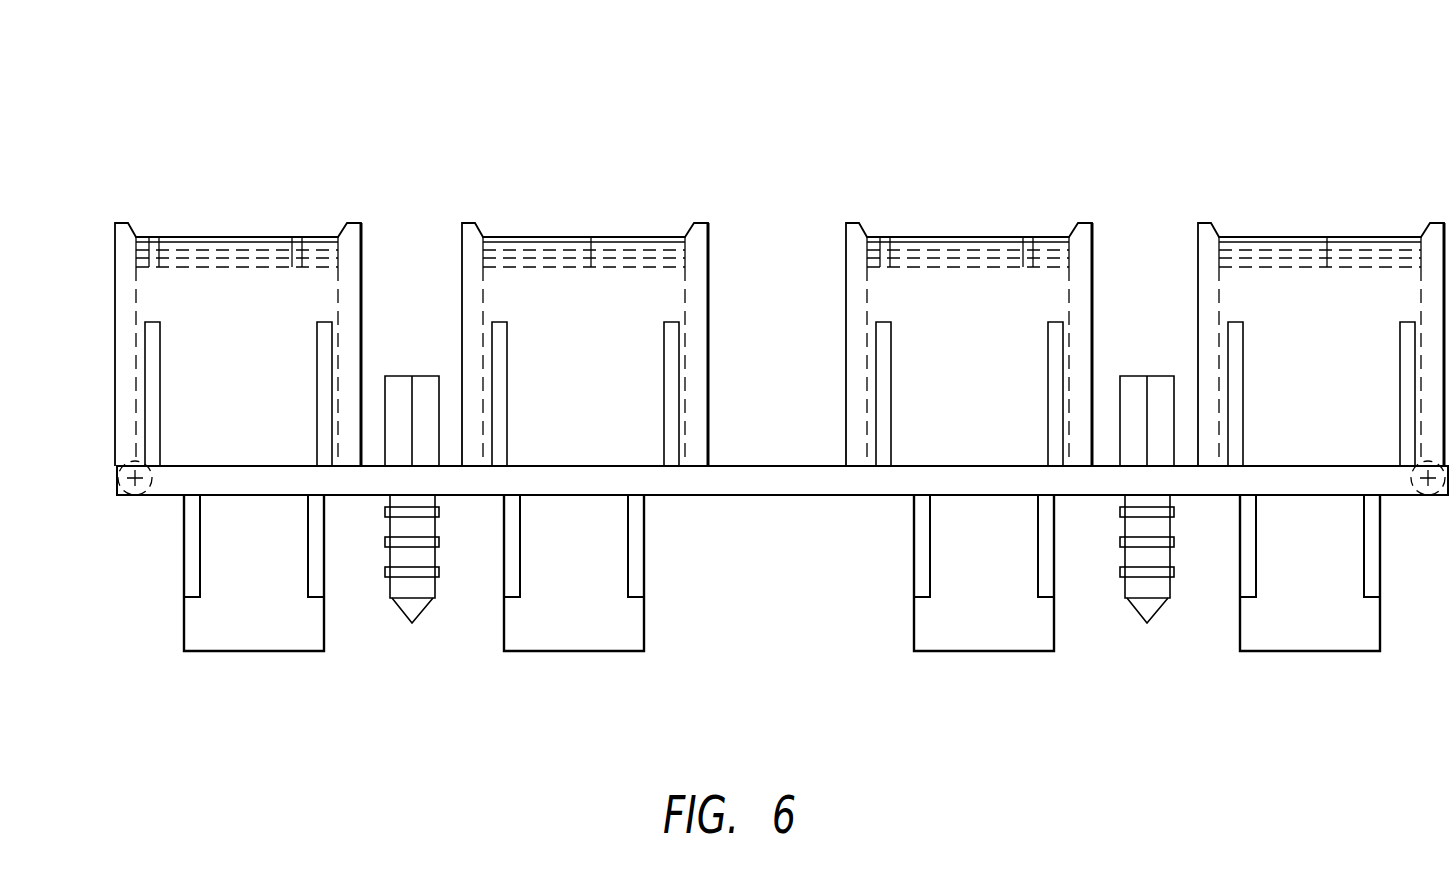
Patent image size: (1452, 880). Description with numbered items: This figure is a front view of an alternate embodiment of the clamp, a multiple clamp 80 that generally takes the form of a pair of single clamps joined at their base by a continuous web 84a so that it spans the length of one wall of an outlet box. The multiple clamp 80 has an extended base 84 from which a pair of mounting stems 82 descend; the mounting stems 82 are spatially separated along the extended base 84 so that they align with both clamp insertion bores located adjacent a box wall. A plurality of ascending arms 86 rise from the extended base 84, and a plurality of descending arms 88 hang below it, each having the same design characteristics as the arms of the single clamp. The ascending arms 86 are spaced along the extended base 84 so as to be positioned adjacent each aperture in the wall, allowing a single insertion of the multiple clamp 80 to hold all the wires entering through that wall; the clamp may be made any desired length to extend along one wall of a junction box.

The multiple clamp 80 is at (848, 52).
The mounting stem 82 is at (410, 620).
The extended base 84 is at (174, 483).
The continuous web 84a is at (737, 496).
The ascending arm 86 is at (347, 223).
The descending arm 88 is at (228, 652).